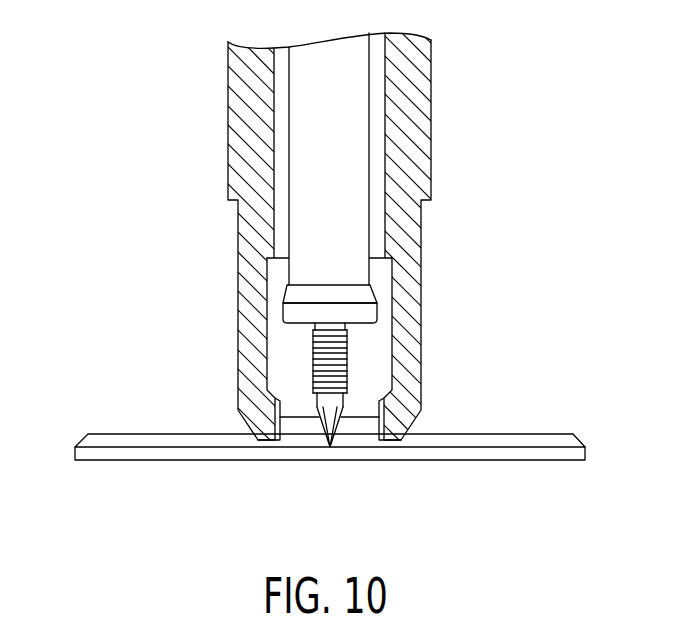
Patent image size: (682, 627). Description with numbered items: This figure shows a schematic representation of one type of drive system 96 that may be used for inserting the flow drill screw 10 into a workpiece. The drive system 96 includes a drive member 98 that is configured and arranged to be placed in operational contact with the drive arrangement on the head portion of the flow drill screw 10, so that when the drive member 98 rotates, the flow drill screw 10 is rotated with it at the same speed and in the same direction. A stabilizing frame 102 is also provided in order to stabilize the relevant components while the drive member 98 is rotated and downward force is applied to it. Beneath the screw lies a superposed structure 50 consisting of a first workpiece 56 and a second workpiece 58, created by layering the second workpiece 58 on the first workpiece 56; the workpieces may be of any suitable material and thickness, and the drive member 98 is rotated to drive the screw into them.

The flow drill screw 10 is at (313, 377).
The superposed structure 50 is at (301, 483).
The first workpiece 56 is at (75, 459).
The second workpiece 58 is at (80, 440).
The drive system 96 is at (513, 206).
The drive member 98 is at (352, 269).
The stabilizing frame 102 is at (417, 387).